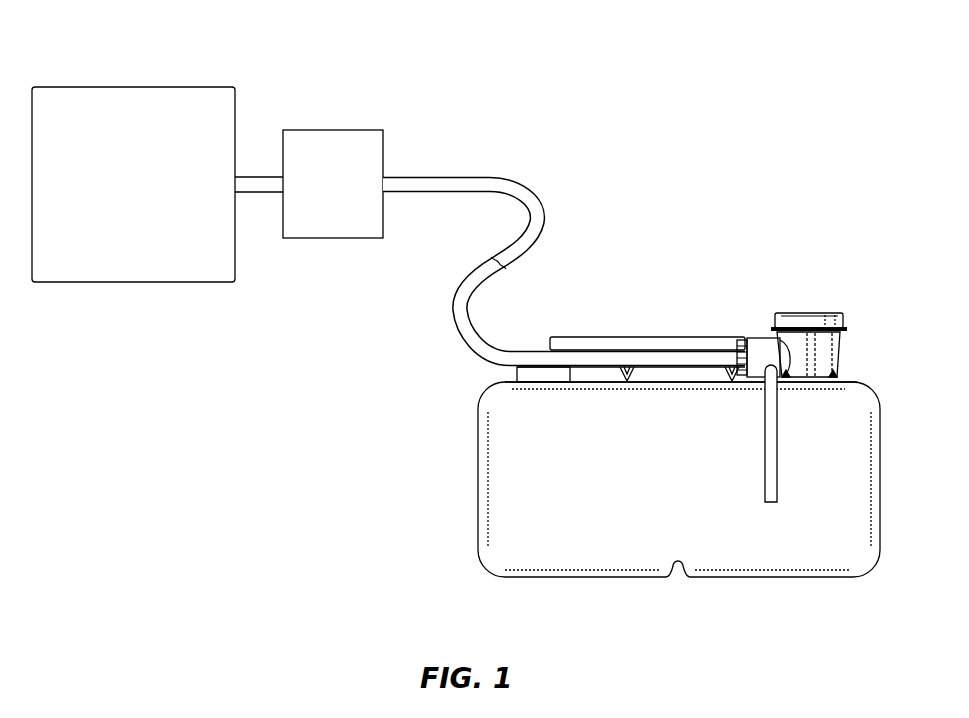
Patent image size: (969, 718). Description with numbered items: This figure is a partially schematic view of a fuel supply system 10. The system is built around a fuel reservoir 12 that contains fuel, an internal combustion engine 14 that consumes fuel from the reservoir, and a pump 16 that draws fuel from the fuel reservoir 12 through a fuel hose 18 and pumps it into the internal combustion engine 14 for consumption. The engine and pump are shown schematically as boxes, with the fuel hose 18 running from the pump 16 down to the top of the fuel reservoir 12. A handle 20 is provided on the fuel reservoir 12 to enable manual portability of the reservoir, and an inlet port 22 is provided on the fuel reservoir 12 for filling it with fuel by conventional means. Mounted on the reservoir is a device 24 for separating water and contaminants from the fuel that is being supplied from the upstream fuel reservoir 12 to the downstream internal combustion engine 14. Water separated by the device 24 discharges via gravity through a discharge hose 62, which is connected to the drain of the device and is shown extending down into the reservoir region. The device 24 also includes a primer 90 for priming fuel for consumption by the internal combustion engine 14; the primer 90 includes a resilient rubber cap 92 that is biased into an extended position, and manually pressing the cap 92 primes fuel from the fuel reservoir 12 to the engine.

The fuel supply system 10 is at (644, 92).
The fuel reservoir 12 is at (856, 383).
The internal combustion engine 14 is at (98, 87).
The pump 16 is at (330, 130).
The fuel hose 18 is at (450, 177).
The handle 20 is at (634, 337).
The inlet port 22 is at (517, 369).
The device 24 is at (839, 302).
The discharge hose 62 is at (766, 442).
The primer 90 is at (787, 310).
The cap 92 is at (808, 313).